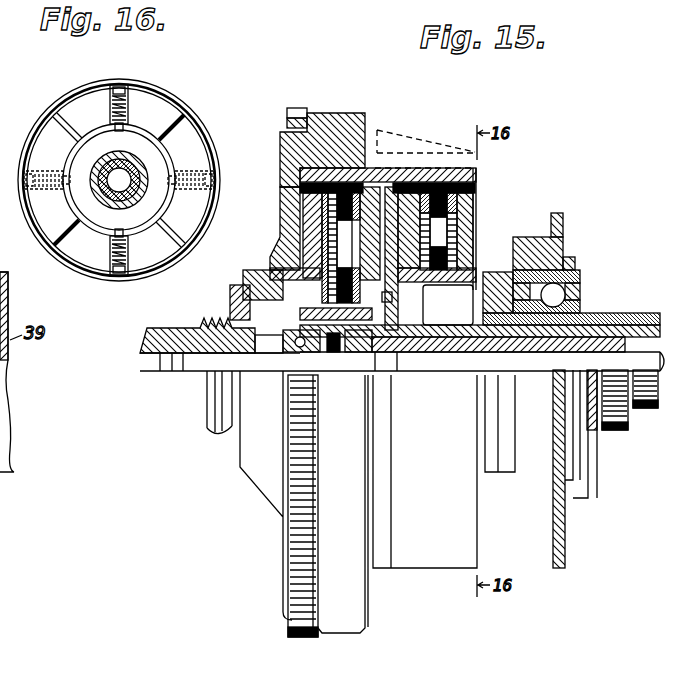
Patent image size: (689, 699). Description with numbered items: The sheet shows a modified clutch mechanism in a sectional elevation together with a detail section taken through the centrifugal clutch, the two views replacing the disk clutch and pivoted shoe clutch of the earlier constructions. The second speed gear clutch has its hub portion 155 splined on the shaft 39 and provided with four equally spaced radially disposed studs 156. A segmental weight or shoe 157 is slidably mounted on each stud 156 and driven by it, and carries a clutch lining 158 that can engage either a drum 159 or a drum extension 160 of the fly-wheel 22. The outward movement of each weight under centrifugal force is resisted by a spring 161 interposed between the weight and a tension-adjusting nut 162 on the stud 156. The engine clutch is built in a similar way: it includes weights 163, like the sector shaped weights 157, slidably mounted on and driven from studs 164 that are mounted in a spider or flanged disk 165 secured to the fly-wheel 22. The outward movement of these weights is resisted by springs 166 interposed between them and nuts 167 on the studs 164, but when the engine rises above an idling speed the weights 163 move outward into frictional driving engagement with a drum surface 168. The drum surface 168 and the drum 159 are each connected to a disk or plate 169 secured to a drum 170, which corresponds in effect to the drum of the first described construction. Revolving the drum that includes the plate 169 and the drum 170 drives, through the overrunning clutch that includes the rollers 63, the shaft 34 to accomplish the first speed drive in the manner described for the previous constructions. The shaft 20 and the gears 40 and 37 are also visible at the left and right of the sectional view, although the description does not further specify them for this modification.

In FIG. 16, the segmental weight or shoe 157 is at (152, 108).
In FIG. 15, the segmental weight or shoe 157 is at (462, 216).
In FIG. 15, the drum extension 160 is at (405, 150).
In FIG. 15, the drum surface 168 is at (300, 170).
In FIG. 15, the fly-wheel 22 is at (276, 256).
In FIG. 15, the drum 159 is at (477, 178).
In FIG. 15, the clutch lining 158 is at (478, 187).
In FIG. 15, the tension-adjusting nut 162 is at (466, 202).
In FIG. 15, the weight 163 is at (312, 210).
In FIG. 15, the nut 167 is at (323, 200).
In FIG. 15, the spring 166 is at (332, 232).
In FIG. 15, the stud 164 is at (340, 256).
In FIG. 15, the drum 170 is at (322, 318).
In FIG. 15, the disk or plate 169 is at (383, 296).
In FIG. 15, the stud 156 is at (440, 238).
In FIG. 15, the spring 161 is at (452, 250).
In FIG. 15, the hub portion 155 is at (427, 325).
In FIG. 15, the shaft 39 is at (447, 342).
In FIG. 15, the roller 63 is at (333, 348).
In FIG. 15, the shaft 20 is at (190, 332).
In FIG. 15, the shaft 34 is at (420, 367).
In FIG. 15, the gear 40 is at (612, 430).
In FIG. 15, the gear 37 is at (645, 409).
In FIG. 15, the spider or flanged disk 165 is at (287, 270).